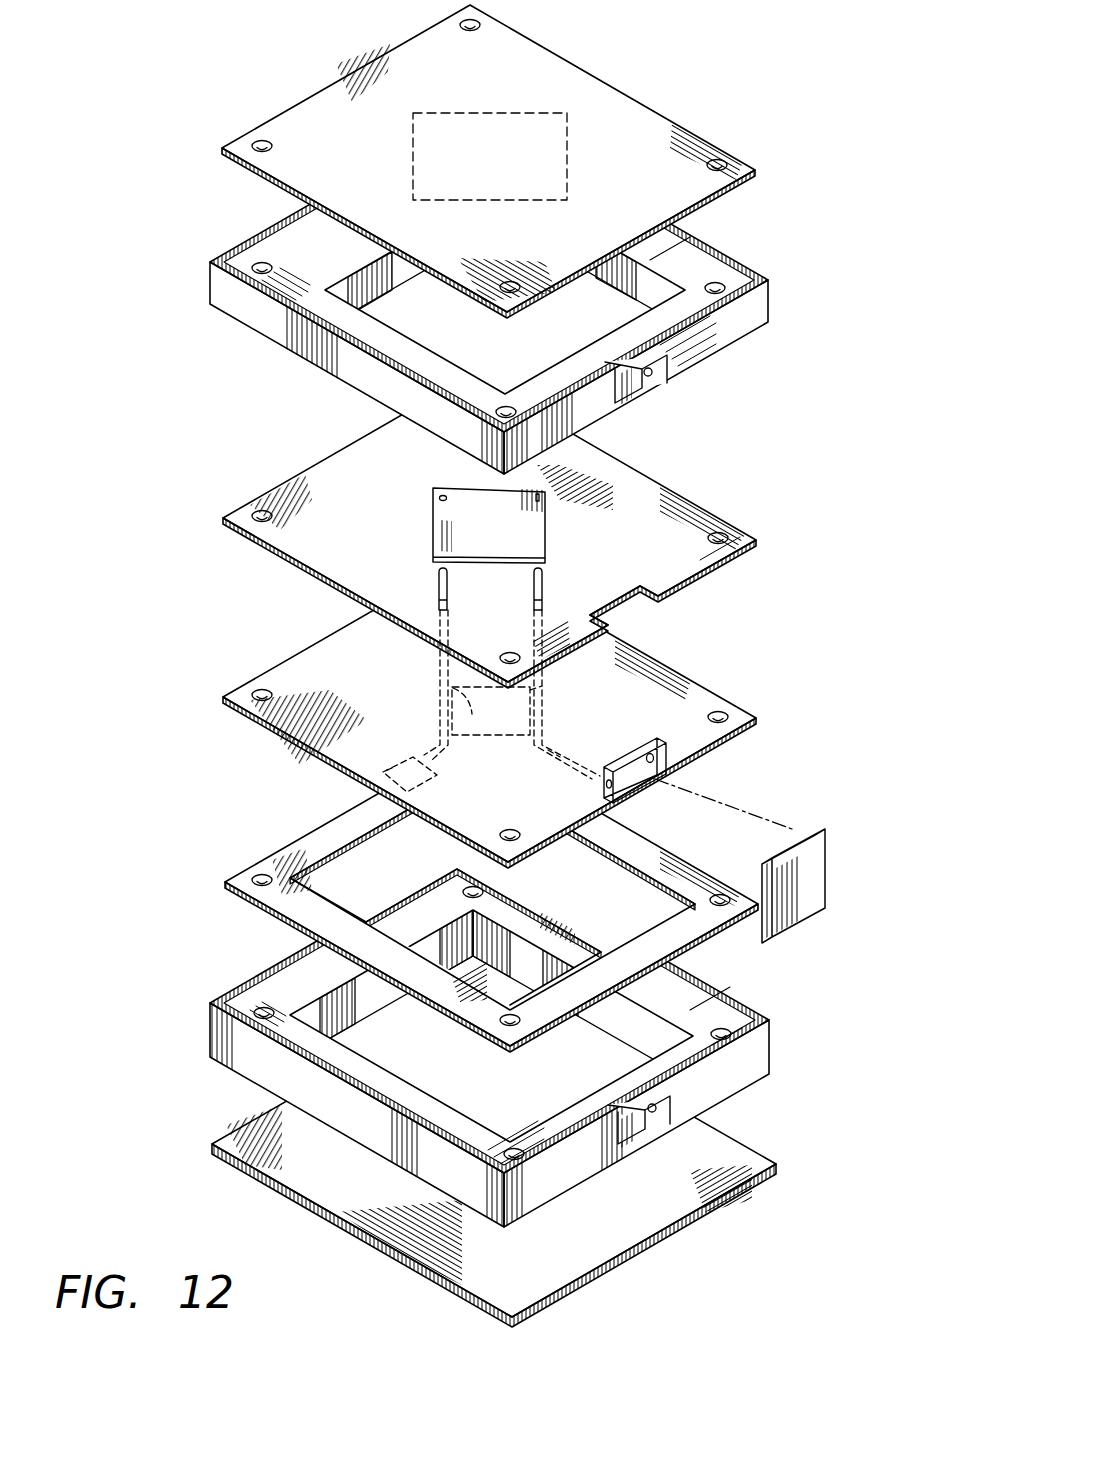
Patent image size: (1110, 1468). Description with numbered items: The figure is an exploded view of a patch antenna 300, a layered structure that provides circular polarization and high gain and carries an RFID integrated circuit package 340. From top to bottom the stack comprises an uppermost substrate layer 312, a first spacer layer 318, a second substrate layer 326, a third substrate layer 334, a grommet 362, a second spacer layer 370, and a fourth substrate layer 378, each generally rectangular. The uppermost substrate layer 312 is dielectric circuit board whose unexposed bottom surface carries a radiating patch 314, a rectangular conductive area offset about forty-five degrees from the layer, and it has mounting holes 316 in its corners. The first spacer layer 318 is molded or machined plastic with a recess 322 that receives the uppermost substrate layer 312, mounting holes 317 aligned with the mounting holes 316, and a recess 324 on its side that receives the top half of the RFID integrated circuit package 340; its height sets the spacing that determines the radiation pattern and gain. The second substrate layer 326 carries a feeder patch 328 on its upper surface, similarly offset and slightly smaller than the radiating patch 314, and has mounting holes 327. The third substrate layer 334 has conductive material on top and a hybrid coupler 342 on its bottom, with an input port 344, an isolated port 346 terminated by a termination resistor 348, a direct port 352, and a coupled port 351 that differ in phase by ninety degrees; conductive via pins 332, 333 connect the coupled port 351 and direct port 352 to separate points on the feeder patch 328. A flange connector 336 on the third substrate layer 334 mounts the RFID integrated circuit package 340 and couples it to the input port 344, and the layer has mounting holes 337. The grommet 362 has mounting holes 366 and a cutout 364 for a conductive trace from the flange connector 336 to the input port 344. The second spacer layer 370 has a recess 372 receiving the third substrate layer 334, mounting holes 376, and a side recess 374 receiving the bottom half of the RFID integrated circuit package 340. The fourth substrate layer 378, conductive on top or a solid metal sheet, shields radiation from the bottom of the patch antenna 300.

The patch antenna 300 is at (146, 112).
The uppermost substrate layer 312 is at (624, 116).
The radiating patch 314 is at (520, 134).
The mounting holes 316 is at (722, 162).
The mounting holes 317 is at (717, 290).
The first spacer layer 318 is at (733, 318).
The recess 322 is at (683, 254).
The recess 324 is at (645, 375).
The second substrate layer 326 is at (630, 497).
The mounting holes 327 is at (745, 553).
The feeder patch 328 is at (433, 538).
The conductive via pin 332 is at (440, 592).
The conductive via pin 333 is at (548, 590).
The third substrate layer 334 is at (705, 692).
The flange connector 336 is at (630, 762).
The mounting holes 337 is at (725, 716).
The RFID integrated circuit package 340 is at (797, 880).
The hybrid coupler 342 is at (452, 693).
The input port 344 is at (585, 740).
The isolated port 346 is at (417, 768).
The termination resistor 348 is at (425, 782).
The coupled port 351 is at (453, 688).
The direct port 352 is at (540, 686).
The grommet 362 is at (690, 928).
The cutout 364 is at (687, 993).
The mounting holes 366 is at (722, 900).
The second spacer layer 370 is at (723, 1080).
The recess 372 is at (736, 1002).
The recess 374 is at (658, 1128).
The mounting holes 376 is at (745, 1027).
The fourth substrate layer 378 is at (617, 1250).